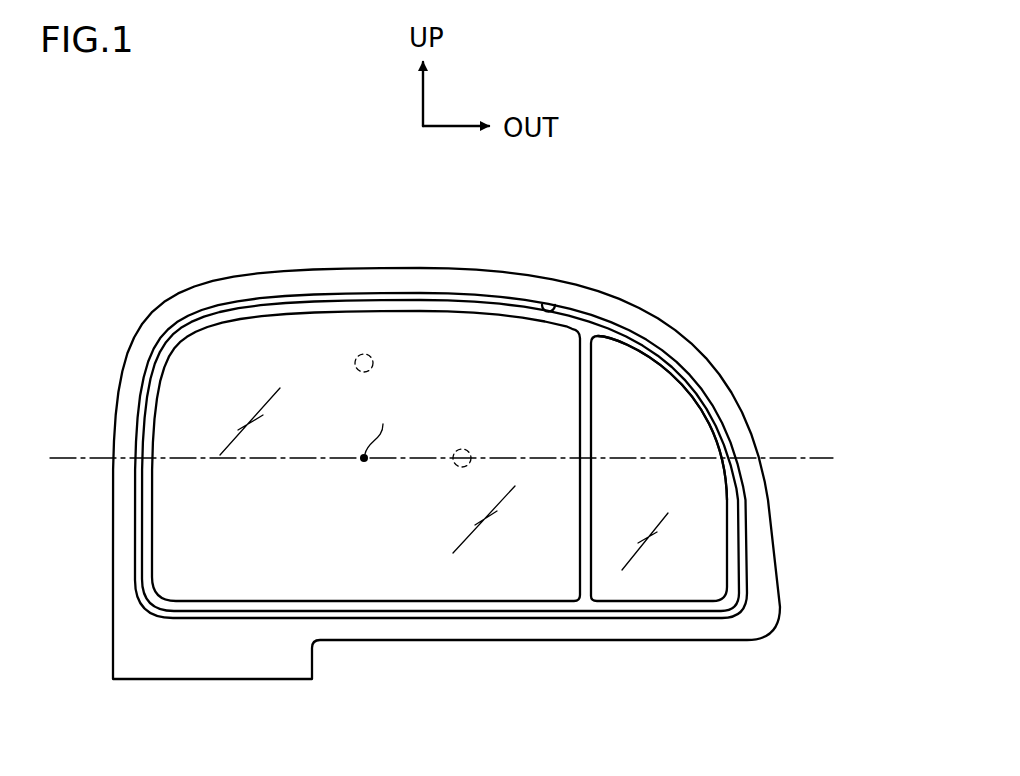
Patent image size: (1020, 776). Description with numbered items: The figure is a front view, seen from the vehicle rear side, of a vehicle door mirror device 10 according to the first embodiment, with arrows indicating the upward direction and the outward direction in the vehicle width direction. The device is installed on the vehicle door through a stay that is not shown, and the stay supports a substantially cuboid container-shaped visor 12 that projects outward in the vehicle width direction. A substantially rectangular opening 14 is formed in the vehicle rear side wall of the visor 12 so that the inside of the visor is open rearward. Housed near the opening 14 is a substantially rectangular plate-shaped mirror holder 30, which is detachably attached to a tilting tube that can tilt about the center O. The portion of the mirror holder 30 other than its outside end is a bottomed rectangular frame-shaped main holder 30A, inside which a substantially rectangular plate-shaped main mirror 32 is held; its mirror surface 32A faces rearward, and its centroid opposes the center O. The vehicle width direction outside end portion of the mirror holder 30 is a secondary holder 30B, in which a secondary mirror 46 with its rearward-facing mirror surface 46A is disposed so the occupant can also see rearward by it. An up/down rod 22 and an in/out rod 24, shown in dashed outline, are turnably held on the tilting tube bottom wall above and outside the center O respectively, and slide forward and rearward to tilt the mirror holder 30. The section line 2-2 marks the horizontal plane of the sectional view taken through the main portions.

The section line 2- 2 is at (63, 450).
The vehicle door mirror device 10 is at (236, 218).
The visor 12 is at (405, 268).
The opening 14 is at (555, 304).
The up/down rod 22 is at (374, 357).
The in/out rod 24 is at (462, 448).
The mirror holder 30 is at (195, 326).
The main holder 30A is at (347, 300).
The secondary holder 30B is at (635, 347).
The main mirror 32 is at (353, 602).
The mirror surface 32A is at (477, 577).
The secondary mirror 46 is at (618, 603).
The mirror surface 46A is at (693, 575).